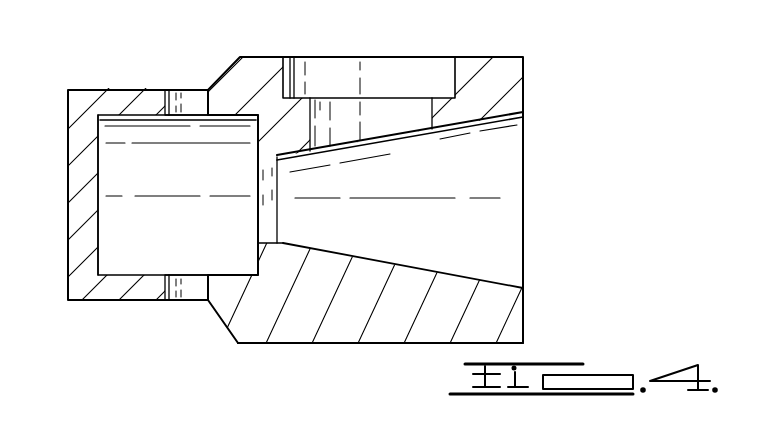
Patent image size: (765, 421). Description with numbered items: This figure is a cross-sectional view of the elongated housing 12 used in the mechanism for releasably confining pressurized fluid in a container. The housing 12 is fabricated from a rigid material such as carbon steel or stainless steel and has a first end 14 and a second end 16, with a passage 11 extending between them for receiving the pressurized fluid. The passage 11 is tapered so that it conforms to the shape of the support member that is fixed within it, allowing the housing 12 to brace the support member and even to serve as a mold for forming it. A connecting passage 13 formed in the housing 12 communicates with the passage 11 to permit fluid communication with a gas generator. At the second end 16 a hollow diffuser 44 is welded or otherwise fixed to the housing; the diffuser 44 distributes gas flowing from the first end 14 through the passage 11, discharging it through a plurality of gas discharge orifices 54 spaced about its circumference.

The passage 11 is at (500, 150).
The housing 12 is at (248, 348).
The connecting passage 13 is at (368, 108).
The first end 14 is at (503, 323).
The second end 16 is at (229, 303).
The diffuser 44 is at (78, 84).
The gas discharge orifices 54 is at (182, 100).